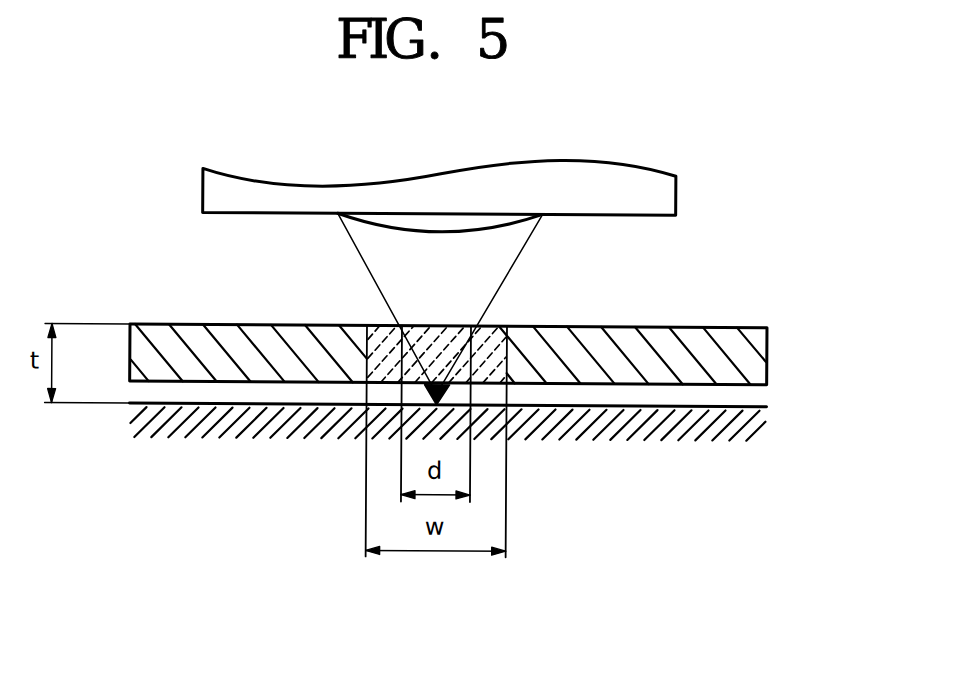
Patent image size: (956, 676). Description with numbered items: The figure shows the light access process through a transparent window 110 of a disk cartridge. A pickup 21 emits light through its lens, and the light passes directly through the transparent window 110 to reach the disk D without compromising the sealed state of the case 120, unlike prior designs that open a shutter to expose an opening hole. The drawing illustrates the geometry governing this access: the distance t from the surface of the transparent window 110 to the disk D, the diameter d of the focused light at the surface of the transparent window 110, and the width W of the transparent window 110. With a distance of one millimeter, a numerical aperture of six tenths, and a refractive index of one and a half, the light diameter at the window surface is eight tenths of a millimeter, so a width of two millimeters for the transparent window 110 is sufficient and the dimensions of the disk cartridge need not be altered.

The pickup 21 is at (665, 195).
The transparent window 110 is at (380, 327).
The case 120 is at (663, 336).
The disk D is at (670, 430).